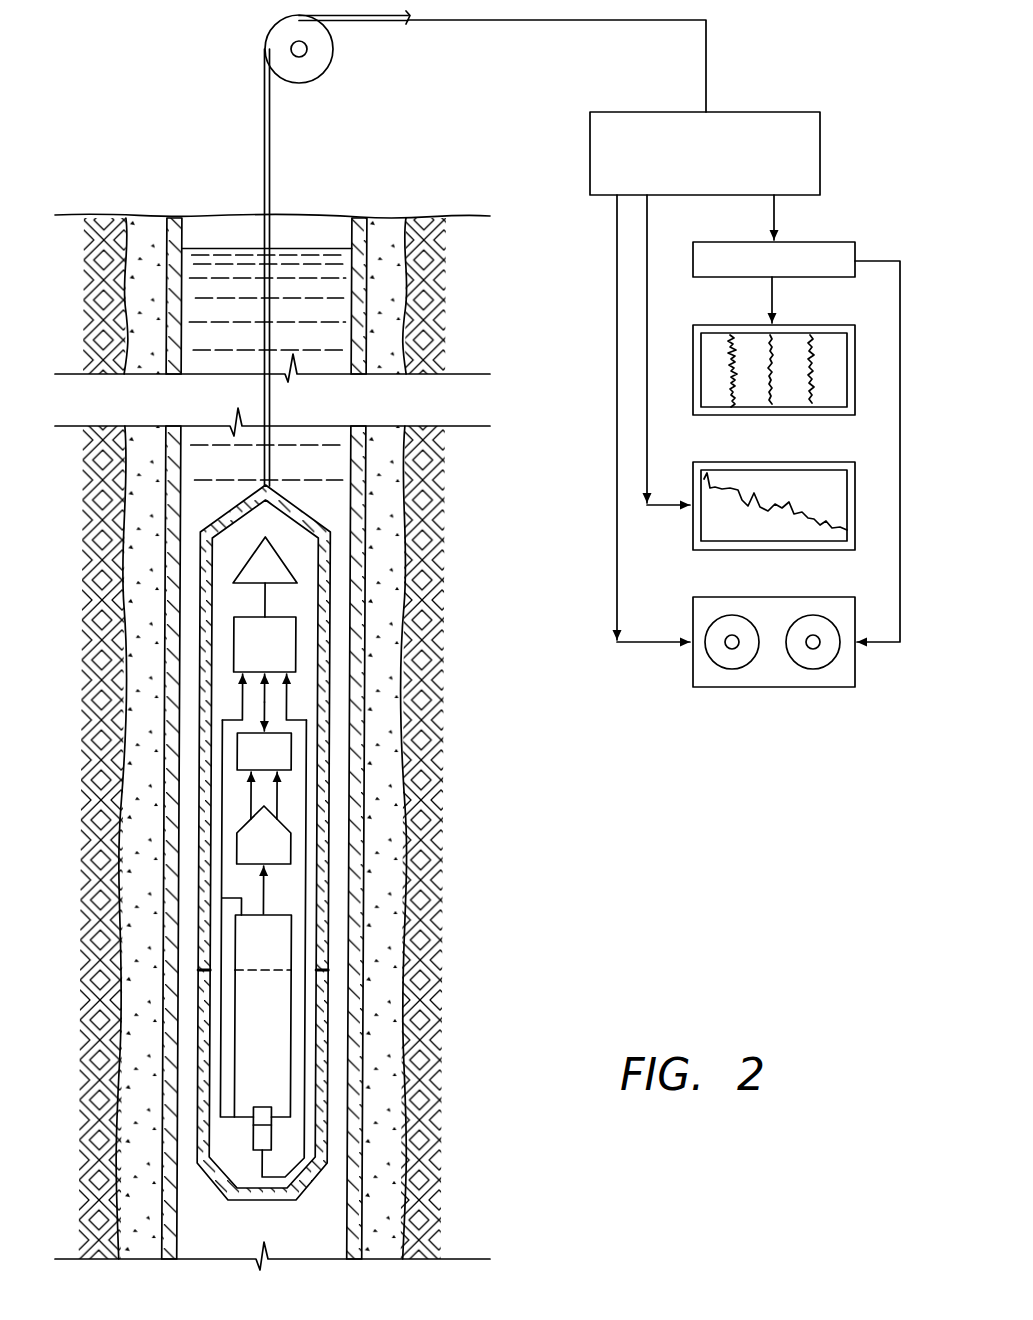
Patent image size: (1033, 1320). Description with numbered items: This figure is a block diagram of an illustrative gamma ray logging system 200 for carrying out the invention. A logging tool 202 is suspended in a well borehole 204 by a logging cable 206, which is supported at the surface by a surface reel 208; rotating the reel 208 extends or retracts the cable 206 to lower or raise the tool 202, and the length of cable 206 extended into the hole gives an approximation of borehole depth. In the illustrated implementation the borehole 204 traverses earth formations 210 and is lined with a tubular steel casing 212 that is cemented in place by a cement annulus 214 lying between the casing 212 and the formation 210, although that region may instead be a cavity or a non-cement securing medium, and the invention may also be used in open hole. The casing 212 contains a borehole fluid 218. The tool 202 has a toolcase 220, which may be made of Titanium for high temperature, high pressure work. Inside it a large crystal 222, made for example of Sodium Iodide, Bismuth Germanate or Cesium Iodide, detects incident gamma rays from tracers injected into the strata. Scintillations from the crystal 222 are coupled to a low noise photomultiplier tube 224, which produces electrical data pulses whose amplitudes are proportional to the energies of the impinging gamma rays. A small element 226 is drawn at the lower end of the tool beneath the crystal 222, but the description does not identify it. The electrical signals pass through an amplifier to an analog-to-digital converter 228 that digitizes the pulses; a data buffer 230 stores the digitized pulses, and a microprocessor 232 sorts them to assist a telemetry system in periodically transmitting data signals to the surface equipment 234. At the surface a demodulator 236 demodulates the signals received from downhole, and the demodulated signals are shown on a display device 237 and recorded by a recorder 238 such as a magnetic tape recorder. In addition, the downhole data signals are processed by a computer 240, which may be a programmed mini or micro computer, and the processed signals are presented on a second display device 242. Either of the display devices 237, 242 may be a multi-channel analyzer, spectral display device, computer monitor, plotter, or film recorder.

The logging system 200 is at (637, 882).
The logging tool 202 is at (360, 840).
The well borehole 204 is at (216, 223).
The logging cable 206 is at (264, 102).
The surface reel 208 is at (323, 72).
The earth formations 210 is at (428, 529).
The tubular steel casing 212 is at (360, 565).
The cement annulus 214 is at (386, 593).
The borehole fluid 218 is at (330, 338).
The toolcase 220 is at (324, 617).
The crystal 222 is at (276, 1050).
The photomultiplier tube 224 is at (278, 943).
The source 226 is at (267, 1142).
The analog-to-digital converter 228 is at (277, 848).
The data buffer 230 is at (281, 753).
The microprocessor 232 is at (281, 646).
The surface equipment 234 is at (745, 368).
The demodulator 236 is at (743, 112).
The display device 237 is at (795, 552).
The recorder 238 is at (795, 689).
The computer 240 is at (800, 280).
The second display device 242 is at (795, 417).